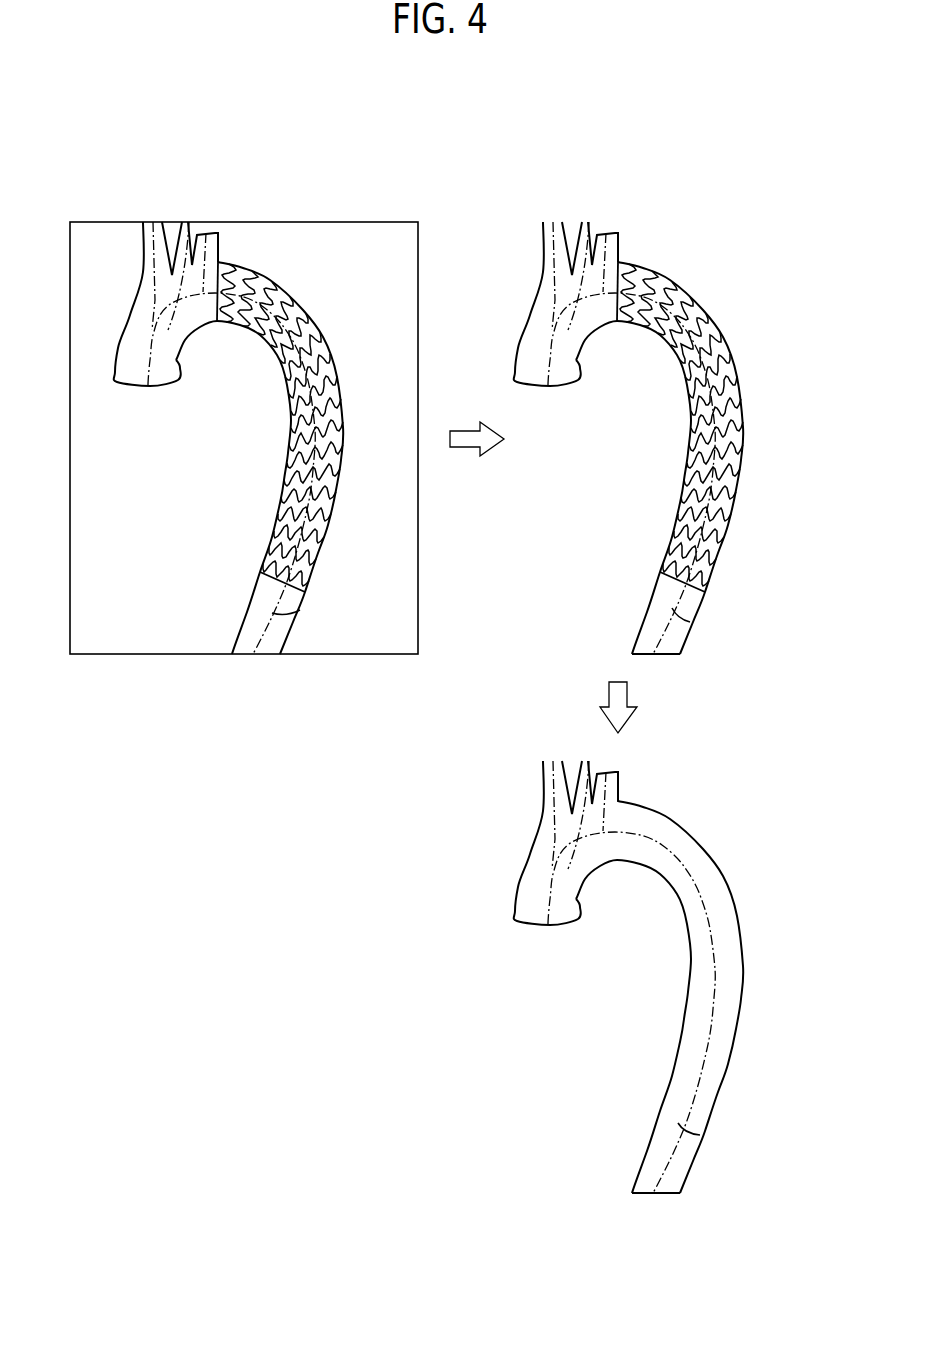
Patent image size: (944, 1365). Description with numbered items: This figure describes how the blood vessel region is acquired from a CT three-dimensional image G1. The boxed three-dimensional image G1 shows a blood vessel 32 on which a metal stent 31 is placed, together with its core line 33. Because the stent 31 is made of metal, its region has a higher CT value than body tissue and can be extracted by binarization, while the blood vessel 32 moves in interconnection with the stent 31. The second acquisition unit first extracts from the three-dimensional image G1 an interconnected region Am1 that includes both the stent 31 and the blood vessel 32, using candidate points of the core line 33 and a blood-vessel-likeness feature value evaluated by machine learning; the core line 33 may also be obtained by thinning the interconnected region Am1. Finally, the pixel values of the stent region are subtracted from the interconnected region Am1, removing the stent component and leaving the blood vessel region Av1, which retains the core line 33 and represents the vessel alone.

The three-dimensional image G1 is at (418, 272).
The stent 31 is at (328, 442).
The blood vessel 32 is at (292, 632).
The core line 33 is at (300, 610).
The interconnected region Am1 is at (736, 401).
The blood vessel region Av1 is at (703, 843).